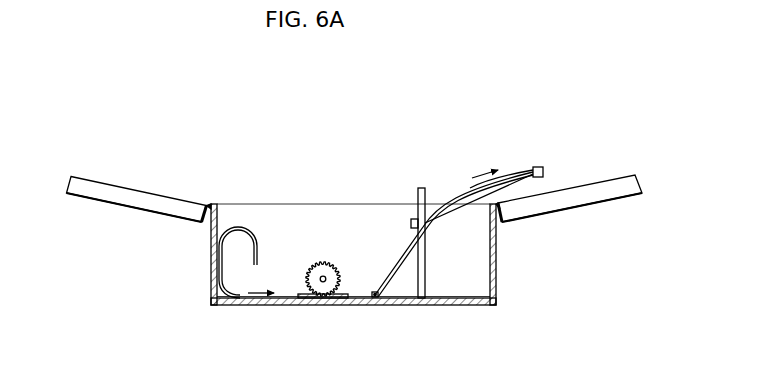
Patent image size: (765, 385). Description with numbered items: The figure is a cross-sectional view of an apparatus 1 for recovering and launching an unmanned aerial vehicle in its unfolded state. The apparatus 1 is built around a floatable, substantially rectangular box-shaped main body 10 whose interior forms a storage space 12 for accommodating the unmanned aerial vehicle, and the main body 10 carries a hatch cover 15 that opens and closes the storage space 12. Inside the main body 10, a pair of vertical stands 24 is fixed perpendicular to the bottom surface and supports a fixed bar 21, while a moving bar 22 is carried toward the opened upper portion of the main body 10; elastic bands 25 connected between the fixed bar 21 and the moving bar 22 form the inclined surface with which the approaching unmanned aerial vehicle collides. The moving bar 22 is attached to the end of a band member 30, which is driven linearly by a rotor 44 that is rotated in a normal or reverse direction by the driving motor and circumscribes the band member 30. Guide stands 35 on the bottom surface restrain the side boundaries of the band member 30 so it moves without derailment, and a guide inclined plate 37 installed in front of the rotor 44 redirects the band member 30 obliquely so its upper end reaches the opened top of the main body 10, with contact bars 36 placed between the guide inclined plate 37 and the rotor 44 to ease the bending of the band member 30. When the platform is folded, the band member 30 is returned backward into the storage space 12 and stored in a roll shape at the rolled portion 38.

The apparatus for recovering and launching an unmanned aerial vehicle 1 is at (486, 98).
The main body 10 is at (211, 250).
The storage space 12 is at (310, 208).
The hatch cover 15 is at (576, 210).
The fixed bar 21 is at (411, 222).
The moving bar 22 is at (538, 167).
The vertical stands 24 is at (421, 188).
The elastic bands 25 is at (523, 170).
The band members 30 is at (277, 305).
The guide stands 35 is at (320, 305).
The contact bars 36 is at (378, 298).
The guide inclined plate 37 is at (400, 285).
The rolled portion 38 is at (238, 224).
The rotor 44 is at (335, 265).